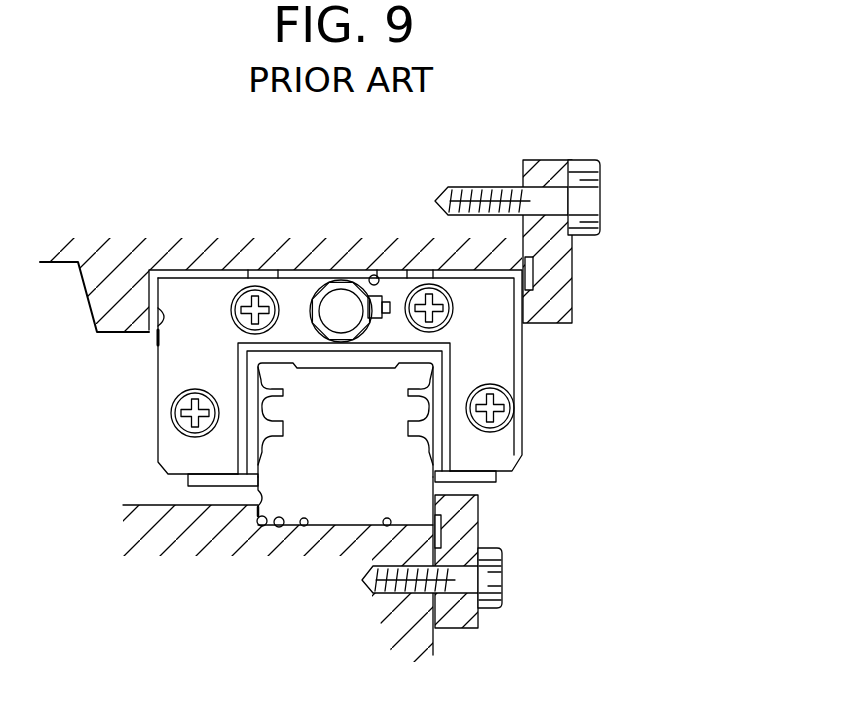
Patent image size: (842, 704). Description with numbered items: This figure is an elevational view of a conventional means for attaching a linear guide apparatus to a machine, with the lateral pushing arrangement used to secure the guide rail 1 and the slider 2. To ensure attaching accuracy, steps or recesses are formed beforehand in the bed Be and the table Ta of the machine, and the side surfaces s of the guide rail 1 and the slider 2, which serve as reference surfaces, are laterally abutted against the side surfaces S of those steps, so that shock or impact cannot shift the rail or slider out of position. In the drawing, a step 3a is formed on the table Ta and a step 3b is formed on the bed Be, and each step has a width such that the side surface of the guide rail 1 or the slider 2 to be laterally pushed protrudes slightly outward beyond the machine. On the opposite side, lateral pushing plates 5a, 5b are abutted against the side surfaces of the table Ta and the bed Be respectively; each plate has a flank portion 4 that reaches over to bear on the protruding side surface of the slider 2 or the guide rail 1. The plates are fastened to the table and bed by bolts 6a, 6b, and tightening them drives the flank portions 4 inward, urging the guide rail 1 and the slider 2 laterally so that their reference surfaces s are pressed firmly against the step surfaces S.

The guide rail 1 is at (355, 462).
The slider 2 is at (193, 295).
The step 3a is at (376, 274).
The step 3b is at (263, 527).
The flank portion 4 is at (530, 260).
The lateral pushing plate 5a is at (558, 300).
The lateral pushing plate 5b is at (467, 535).
The bolt 6a is at (592, 173).
The bolt 6b is at (500, 587).
The side surface s is at (150, 313).
The side surface S is at (155, 345).
The table Ta is at (277, 183).
The bed Be is at (335, 655).